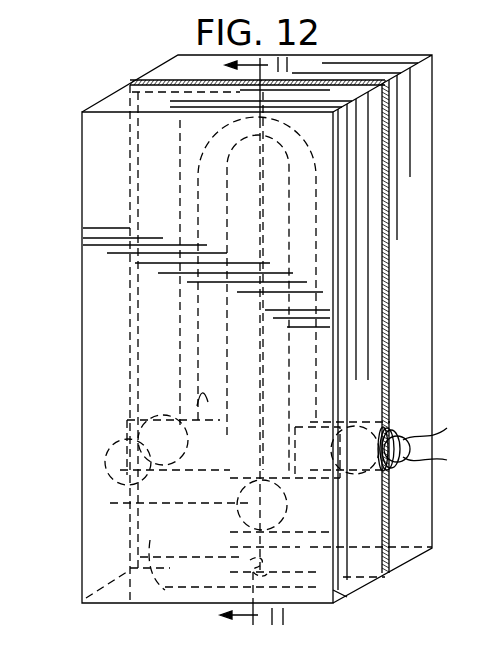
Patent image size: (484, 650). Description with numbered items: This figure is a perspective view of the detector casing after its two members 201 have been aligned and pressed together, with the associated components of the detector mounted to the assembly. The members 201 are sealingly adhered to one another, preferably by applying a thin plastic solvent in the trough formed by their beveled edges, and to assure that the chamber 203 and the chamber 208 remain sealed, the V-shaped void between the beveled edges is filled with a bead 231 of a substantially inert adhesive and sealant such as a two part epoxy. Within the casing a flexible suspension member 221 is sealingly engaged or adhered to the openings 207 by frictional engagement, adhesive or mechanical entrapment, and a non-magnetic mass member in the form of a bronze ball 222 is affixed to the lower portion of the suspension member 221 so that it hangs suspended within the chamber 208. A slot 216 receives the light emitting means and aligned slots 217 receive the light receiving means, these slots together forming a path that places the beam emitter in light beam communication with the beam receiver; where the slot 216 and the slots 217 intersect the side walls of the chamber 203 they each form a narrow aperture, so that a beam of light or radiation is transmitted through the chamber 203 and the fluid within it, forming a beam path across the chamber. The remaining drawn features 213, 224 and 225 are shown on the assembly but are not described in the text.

The members 201 is at (345, 200).
The chamber 203 is at (200, 194).
The openings 207 is at (132, 84).
The chamber 208 is at (140, 557).
The bottom corner 213 is at (352, 592).
The slot 216 is at (196, 392).
The slots 217 is at (298, 430).
The flexible suspension member 221 is at (200, 157).
The bronze ball 222 is at (190, 535).
The knob 224 is at (405, 442).
The roller 225 is at (105, 470).
The bead 231 is at (385, 213).